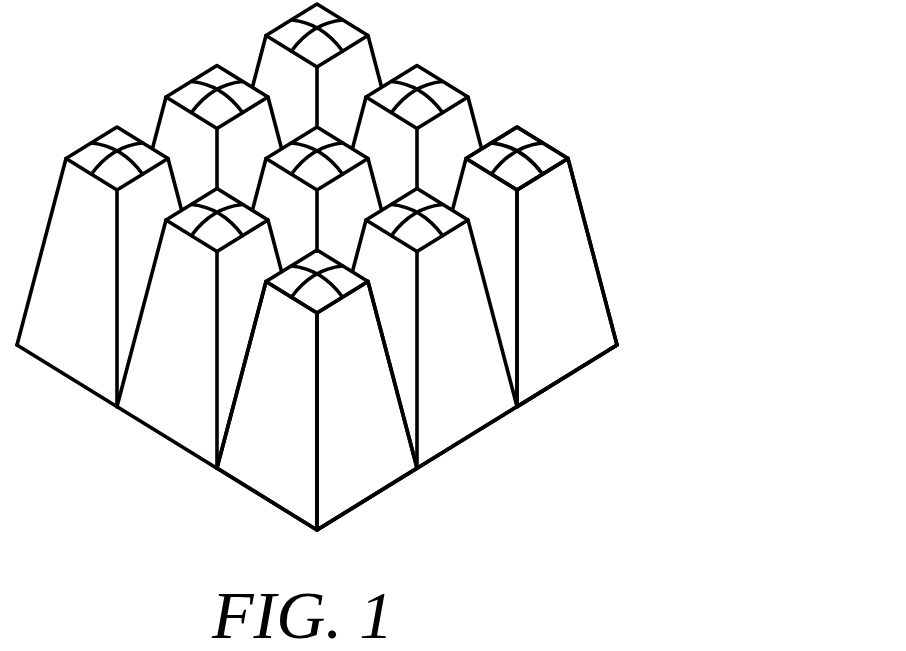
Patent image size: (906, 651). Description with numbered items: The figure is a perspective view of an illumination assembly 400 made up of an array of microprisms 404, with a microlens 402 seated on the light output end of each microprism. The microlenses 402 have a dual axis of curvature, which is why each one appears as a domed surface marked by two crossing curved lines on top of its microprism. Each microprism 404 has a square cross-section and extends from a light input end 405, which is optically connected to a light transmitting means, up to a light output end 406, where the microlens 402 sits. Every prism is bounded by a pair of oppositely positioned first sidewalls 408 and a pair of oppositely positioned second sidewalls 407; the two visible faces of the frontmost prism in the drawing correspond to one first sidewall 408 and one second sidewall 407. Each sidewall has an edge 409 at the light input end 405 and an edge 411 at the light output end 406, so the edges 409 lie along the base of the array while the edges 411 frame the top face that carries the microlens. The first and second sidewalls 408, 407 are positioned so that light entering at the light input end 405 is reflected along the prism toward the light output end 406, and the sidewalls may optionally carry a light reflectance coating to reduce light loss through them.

The illumination assembly 400 is at (395, 292).
The microlens 402 is at (432, 93).
The microprisms 404 is at (583, 317).
The light input end 405 is at (565, 382).
The light output end 406 is at (538, 176).
The second sidewalls 407 is at (360, 470).
The first sidewalls 408 is at (270, 453).
The edge 409 is at (343, 512).
The edge 411 is at (242, 238).